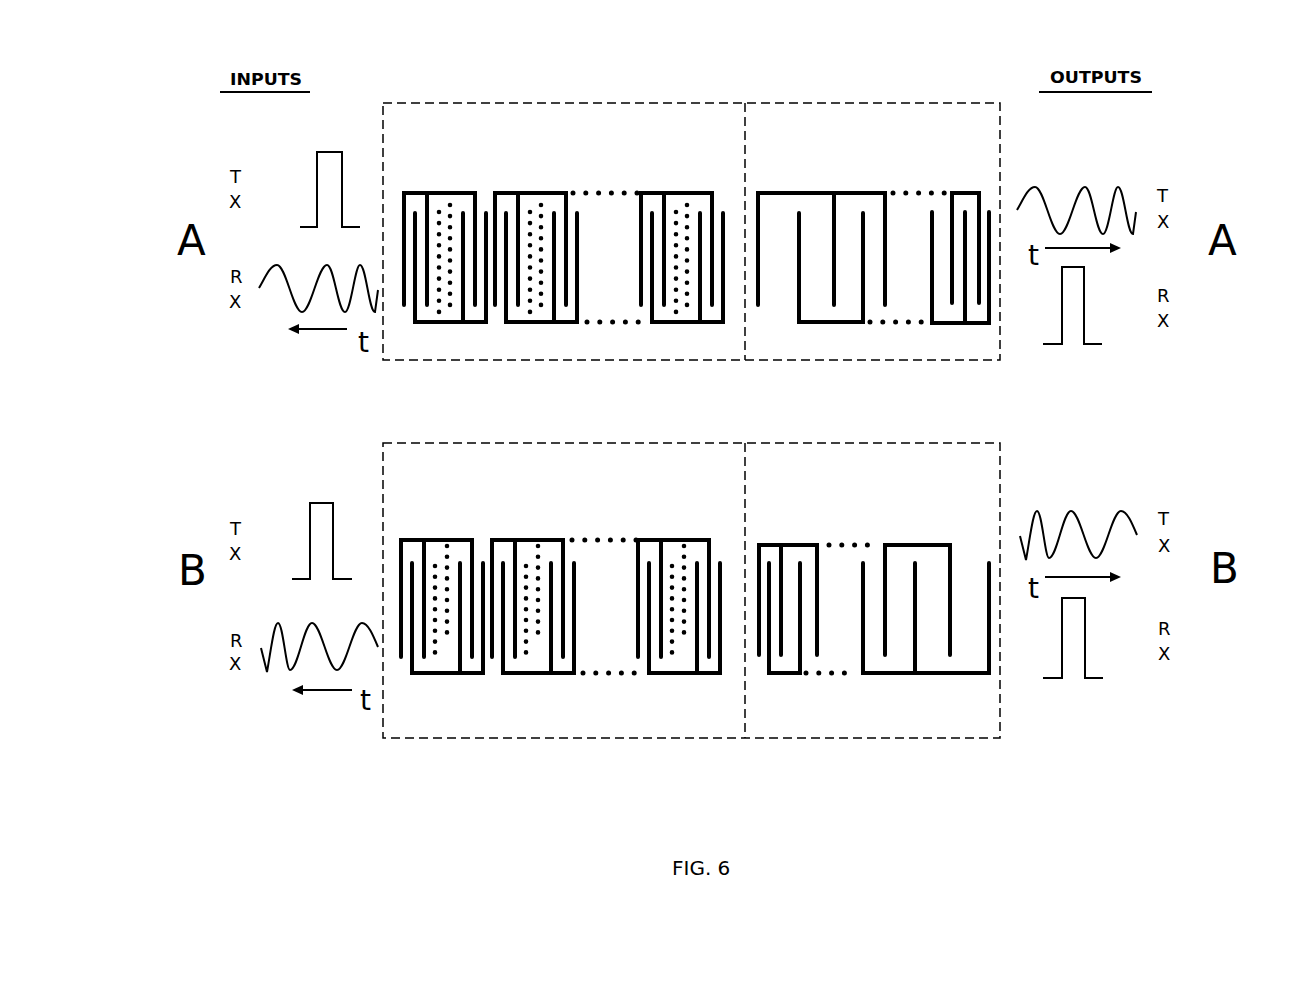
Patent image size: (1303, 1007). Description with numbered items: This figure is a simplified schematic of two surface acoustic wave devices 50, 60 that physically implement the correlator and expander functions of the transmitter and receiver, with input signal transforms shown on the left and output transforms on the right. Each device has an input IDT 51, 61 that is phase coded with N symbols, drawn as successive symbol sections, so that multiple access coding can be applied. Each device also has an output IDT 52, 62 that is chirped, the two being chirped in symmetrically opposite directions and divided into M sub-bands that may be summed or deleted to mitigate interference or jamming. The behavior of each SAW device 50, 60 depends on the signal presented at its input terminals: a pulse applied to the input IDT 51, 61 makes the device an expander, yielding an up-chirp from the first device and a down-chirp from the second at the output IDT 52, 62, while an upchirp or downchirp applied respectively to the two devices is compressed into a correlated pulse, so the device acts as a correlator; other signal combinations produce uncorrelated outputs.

The SAW device 50 is at (582, 102).
The input IDT 51 is at (630, 356).
The output IDT 52 is at (899, 356).
The SAW device 60 is at (582, 738).
The input IDT 61 is at (628, 728).
The output IDT 62 is at (903, 728).